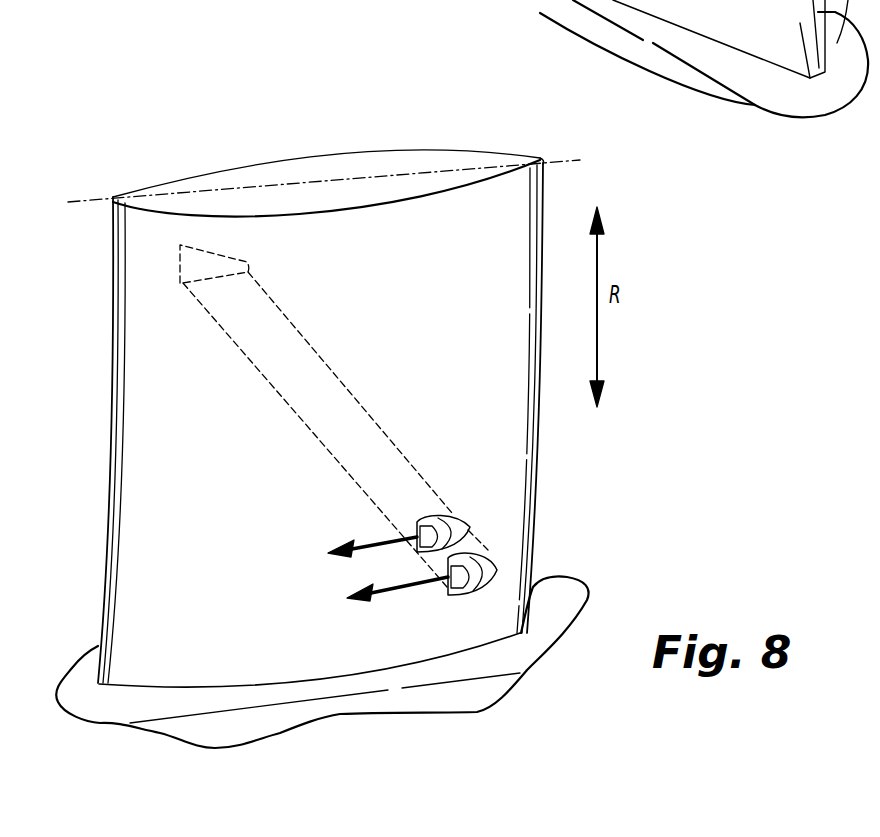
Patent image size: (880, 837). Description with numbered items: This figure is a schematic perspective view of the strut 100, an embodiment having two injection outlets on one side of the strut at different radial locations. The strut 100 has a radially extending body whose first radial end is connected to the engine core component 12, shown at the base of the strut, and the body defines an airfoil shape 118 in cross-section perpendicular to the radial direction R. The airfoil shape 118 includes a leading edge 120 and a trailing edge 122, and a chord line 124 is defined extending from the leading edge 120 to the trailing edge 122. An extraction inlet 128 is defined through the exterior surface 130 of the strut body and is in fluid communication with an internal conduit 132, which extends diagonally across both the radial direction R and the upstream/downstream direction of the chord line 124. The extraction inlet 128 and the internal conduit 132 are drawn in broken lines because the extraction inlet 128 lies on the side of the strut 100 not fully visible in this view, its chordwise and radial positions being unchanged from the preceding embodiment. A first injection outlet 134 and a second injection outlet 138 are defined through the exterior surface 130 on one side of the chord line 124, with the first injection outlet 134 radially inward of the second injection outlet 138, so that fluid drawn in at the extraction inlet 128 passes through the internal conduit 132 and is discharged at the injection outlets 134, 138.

The strut 100 is at (349, 348).
The trailing edge 122 is at (86, 396).
The leading edge 120 is at (568, 356).
The chord line 124 is at (324, 150).
The extraction inlet 128 is at (151, 263).
The internal conduit 132 is at (335, 429).
The second injection outlet 138 is at (409, 487).
The injection outlet 134 is at (426, 537).
The airfoil shape 118 is at (584, 398).
The exterior surface 130 is at (584, 398).
The engine core component 12 is at (313, 662).